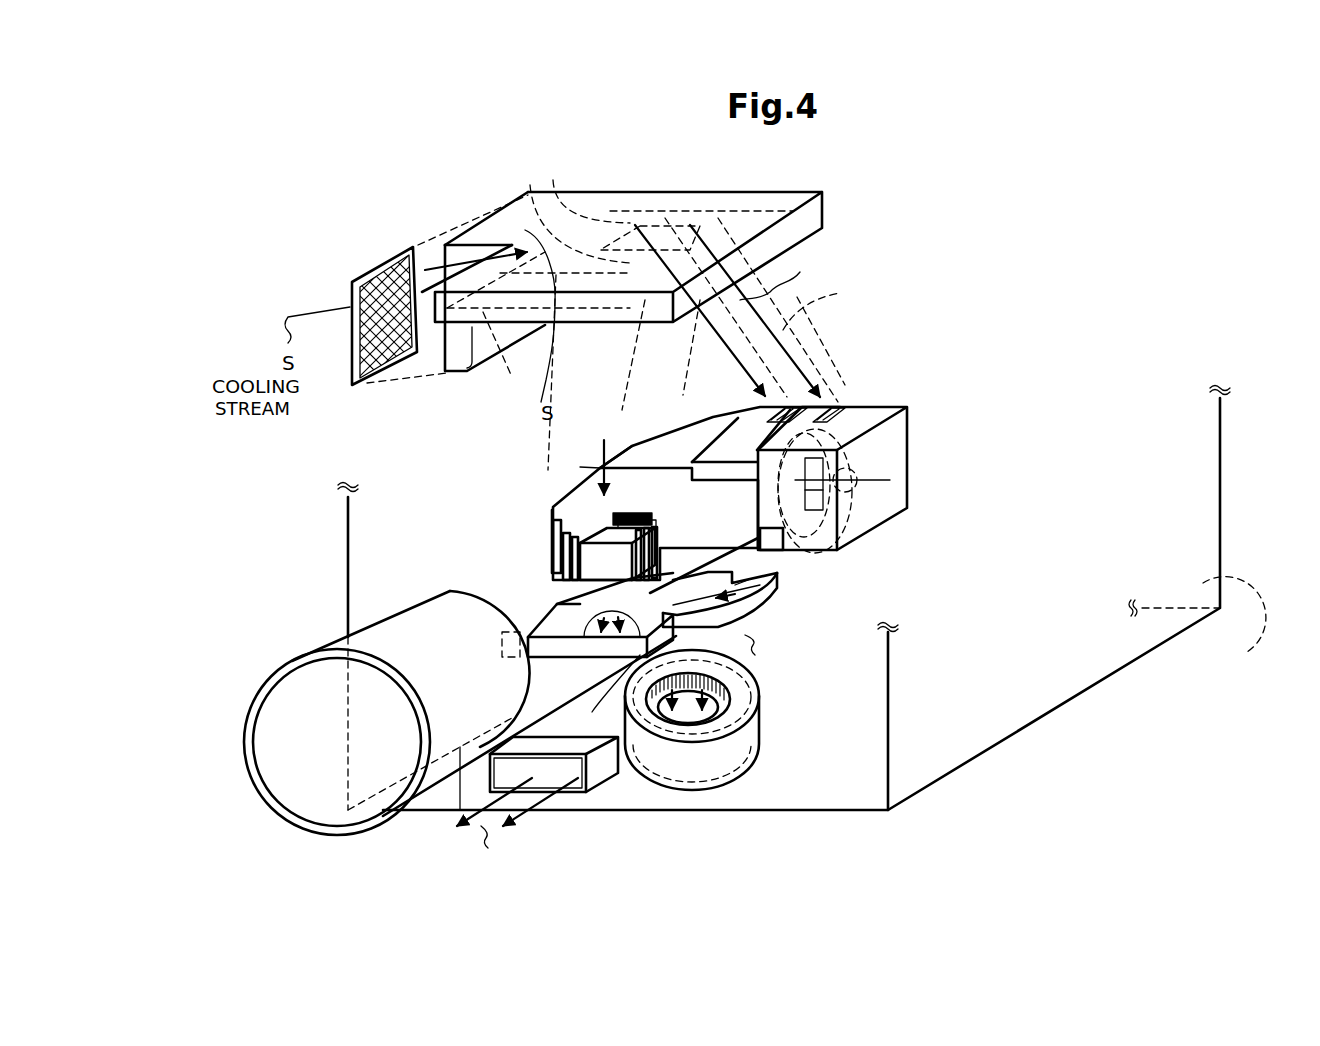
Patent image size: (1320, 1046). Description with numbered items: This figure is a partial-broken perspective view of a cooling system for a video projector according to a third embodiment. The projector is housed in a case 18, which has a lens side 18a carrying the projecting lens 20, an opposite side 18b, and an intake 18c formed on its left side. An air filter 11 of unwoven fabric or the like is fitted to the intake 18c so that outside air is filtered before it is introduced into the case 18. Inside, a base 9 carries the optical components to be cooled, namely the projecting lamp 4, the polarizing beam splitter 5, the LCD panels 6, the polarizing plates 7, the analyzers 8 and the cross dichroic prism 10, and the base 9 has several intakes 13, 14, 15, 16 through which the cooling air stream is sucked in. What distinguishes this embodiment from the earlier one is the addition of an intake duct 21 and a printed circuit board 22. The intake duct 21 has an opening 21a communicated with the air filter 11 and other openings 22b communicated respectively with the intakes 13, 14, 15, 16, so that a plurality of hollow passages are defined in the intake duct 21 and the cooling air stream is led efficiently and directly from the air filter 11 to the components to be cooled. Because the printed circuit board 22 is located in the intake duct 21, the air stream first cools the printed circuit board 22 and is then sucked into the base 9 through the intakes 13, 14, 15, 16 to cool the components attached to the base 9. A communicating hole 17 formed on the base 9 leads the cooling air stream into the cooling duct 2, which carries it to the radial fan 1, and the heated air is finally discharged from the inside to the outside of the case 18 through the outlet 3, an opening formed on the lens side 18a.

The radial fan 1 is at (744, 790).
The cooling duct 2 is at (750, 600).
The outlet 3 is at (569, 808).
The projecting lamp 4 is at (885, 480).
The polarizing beam splitter 5 is at (760, 378).
The LCD panels 6 is at (572, 548).
The polarizing plates 7 is at (553, 520).
The analyzers 8 is at (703, 427).
The base 9 is at (890, 508).
The cross dichroic prism 10 is at (596, 572).
The air filter 11 is at (370, 270).
The intake 13 is at (790, 408).
The intake 14 is at (836, 408).
The intake 15 is at (784, 548).
The intake 16 is at (604, 440).
The communicating hole 17 is at (745, 578).
The case 18 is at (1035, 748).
The lens side 18a is at (866, 790).
The opposite side 18b is at (1244, 649).
The intake 18c is at (350, 292).
The projecting lens 20 is at (340, 637).
The intake duct 21 is at (475, 223).
The opening 21a is at (447, 343).
The printed circuit board 22 is at (613, 223).
The openings 22b is at (545, 198).